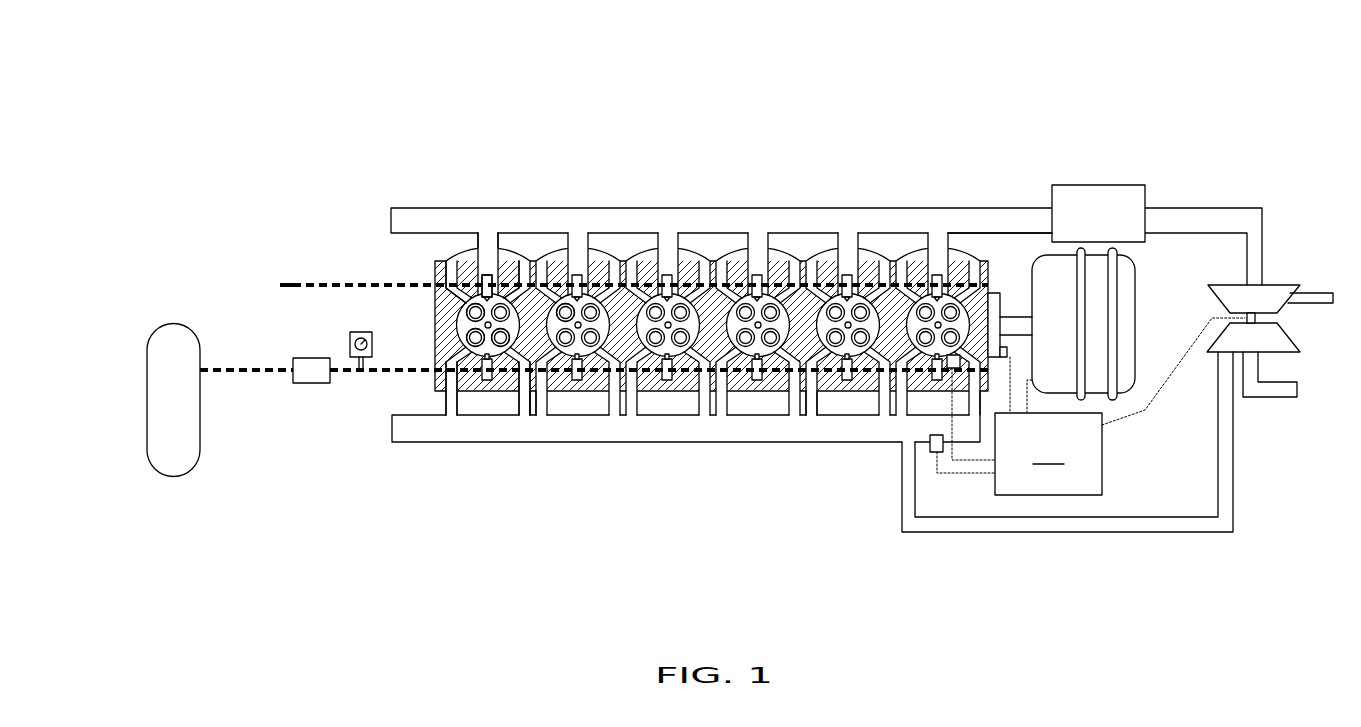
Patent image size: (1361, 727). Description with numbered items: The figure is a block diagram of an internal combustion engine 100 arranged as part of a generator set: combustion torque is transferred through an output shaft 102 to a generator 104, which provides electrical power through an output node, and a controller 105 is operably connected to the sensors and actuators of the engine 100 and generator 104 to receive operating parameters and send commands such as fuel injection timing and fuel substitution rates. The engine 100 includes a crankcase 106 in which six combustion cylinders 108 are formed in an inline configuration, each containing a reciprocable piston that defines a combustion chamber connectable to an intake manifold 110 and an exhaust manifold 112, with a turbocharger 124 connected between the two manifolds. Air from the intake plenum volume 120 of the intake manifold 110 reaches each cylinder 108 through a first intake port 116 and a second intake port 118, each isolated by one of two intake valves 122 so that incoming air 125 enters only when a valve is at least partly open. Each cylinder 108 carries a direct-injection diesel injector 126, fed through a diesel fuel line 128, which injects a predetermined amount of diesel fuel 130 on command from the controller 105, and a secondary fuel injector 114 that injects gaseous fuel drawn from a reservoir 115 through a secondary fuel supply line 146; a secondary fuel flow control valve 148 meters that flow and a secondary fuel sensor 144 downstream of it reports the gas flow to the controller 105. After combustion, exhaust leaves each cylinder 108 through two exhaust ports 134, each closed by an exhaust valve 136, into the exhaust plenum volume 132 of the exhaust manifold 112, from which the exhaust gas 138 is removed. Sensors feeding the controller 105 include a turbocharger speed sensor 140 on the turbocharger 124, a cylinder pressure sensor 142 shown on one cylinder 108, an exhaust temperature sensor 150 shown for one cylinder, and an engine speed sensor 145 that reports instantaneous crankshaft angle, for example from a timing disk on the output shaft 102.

The internal combustion engine 100 is at (608, 81).
The output shaft 102 is at (1013, 325).
The generator 104 is at (1136, 336).
The controller 105 is at (1091, 406).
The crankcase 106 is at (435, 389).
The combustion cylinders 108 is at (667, 293).
The intake manifold 110 is at (421, 215).
The exhaust manifold 112 is at (532, 432).
The secondary fuel injector 114 is at (836, 402).
The reservoir 115 is at (146, 378).
The first intake port 116 is at (452, 279).
The second intake port 118 is at (520, 285).
The intake plenum volume 120 is at (489, 222).
The intake valves 122 is at (474, 304).
The turbocharger 124 is at (1280, 265).
The incoming air 125 is at (382, 227).
The direct-injection diesel injector 126 is at (492, 276).
The diesel fuel line 128 is at (277, 289).
The diesel fuel 130 is at (270, 292).
The exhaust plenum volume 132 is at (721, 433).
The exhaust ports 134 is at (453, 405).
The exhaust valve 136 is at (478, 342).
The exhaust gas 138 is at (388, 430).
The turbocharger speed sensor 140 is at (1255, 318).
The cylinder pressure sensor 142 is at (986, 330).
The secondary fuel sensor 144 is at (352, 333).
The engine speed sensor 145 is at (1004, 347).
The secondary fuel supply line 146 is at (259, 366).
The secondary fuel flow control valve 148 is at (294, 358).
The exhaust temperature sensor 150 is at (930, 447).